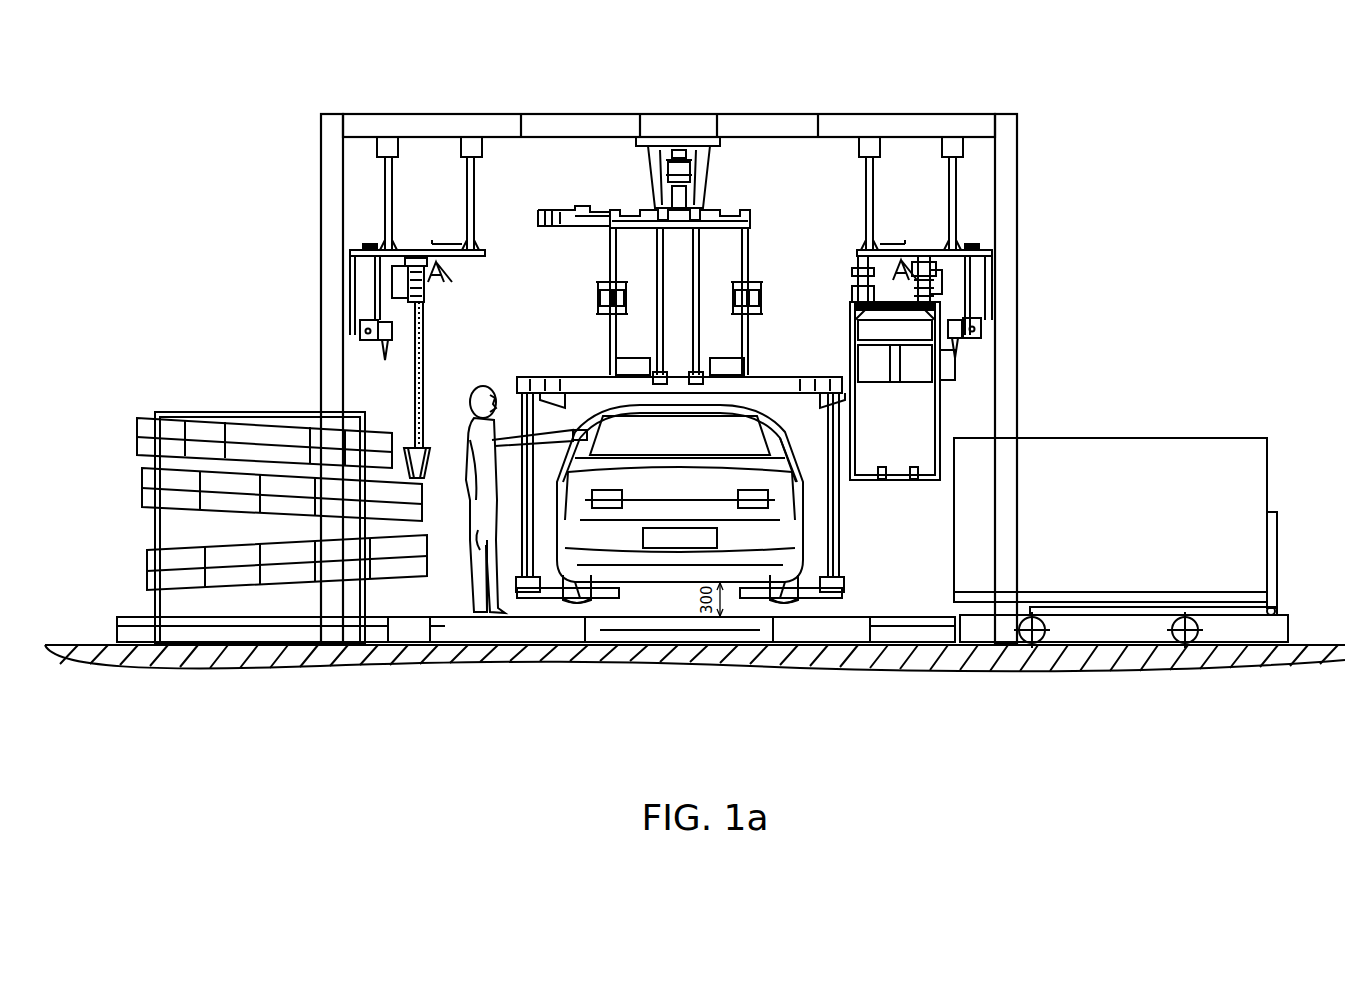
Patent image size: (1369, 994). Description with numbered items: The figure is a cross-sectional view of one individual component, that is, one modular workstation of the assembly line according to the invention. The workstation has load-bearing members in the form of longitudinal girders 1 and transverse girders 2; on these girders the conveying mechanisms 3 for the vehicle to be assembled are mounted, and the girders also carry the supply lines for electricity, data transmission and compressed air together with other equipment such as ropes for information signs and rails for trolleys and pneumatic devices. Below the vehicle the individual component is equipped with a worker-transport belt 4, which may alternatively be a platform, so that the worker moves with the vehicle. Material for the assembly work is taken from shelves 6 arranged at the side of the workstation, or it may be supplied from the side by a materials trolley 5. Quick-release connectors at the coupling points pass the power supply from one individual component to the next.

The longitudinal girder 1 is at (483, 142).
The transverse girder 2 is at (582, 120).
The conveying mechanism 3 is at (718, 208).
The worker-transport belt 4 is at (820, 640).
The cabinet / control unit 5 is at (1130, 452).
The shelf 6 is at (240, 430).